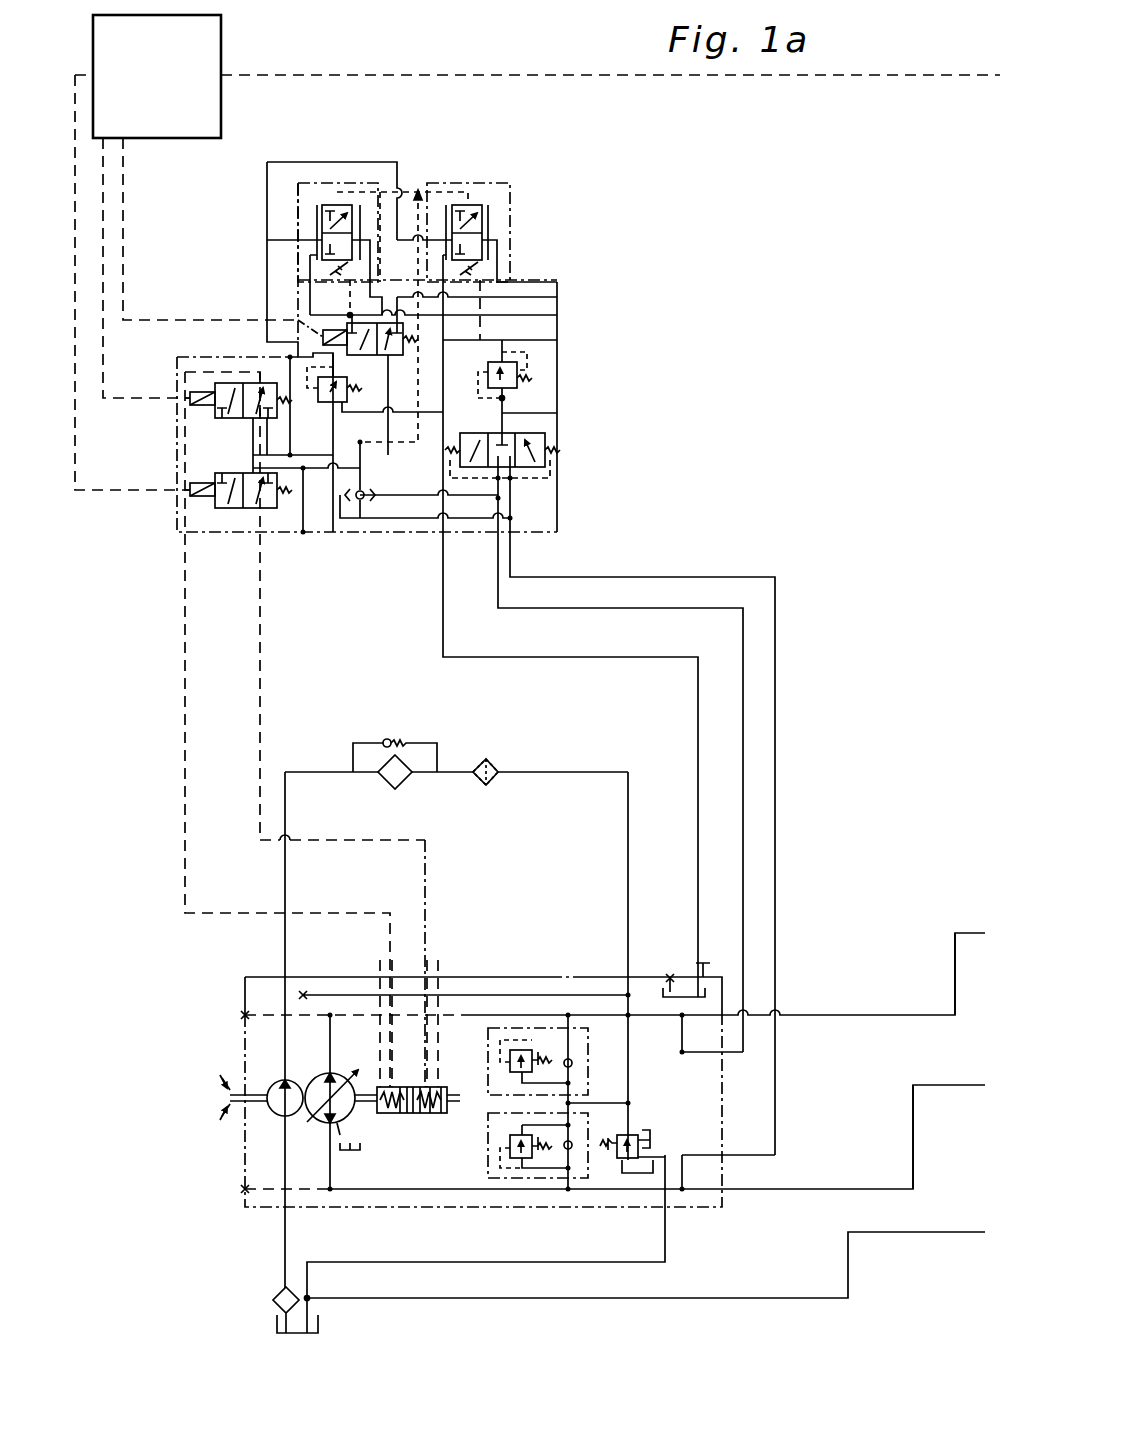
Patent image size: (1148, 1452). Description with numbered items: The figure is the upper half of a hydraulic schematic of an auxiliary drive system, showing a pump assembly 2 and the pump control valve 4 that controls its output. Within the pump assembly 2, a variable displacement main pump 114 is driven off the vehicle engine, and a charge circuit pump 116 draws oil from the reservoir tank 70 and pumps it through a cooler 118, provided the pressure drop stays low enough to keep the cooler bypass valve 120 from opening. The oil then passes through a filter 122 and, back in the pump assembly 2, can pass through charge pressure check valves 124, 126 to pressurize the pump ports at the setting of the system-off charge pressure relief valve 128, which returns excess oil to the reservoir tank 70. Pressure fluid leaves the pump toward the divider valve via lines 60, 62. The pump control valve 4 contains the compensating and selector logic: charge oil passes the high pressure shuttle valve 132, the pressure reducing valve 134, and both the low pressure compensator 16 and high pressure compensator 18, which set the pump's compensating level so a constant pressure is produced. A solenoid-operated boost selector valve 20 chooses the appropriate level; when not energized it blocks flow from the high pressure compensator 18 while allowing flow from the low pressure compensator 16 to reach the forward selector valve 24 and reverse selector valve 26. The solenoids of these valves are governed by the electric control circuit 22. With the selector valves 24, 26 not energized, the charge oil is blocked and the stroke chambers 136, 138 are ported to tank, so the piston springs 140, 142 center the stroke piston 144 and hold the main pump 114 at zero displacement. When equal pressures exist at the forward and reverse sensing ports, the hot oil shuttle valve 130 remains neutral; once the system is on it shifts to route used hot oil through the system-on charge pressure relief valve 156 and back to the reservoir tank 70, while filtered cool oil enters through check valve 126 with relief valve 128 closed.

The electric control circuit 22 is at (221, 50).
The low pressure compensator 16 is at (325, 205).
The high pressure compensator 18 is at (462, 205).
The selector valve 20 is at (348, 327).
The forward selector valve 24 is at (232, 418).
The reverse selector valve 26 is at (243, 508).
The pressure reducing valve 134 is at (329, 392).
The high pressure shuttle valve 132 is at (385, 485).
The system-on charge pressure relief valve 156 is at (520, 382).
The hot oil shuttle valve 130 is at (548, 445).
The pump control valve 4 is at (560, 502).
The cooler bypass valve 120 is at (389, 738).
The filter 122 is at (493, 760).
The cooler 118 is at (407, 790).
The pump assembly 2 is at (242, 1192).
The line 60 is at (955, 957).
The line 62 is at (913, 1146).
The variable displacement main pump 114 is at (326, 1072).
The charge circuit pump 116 is at (279, 1116).
The stroke chamber 136 is at (387, 1113).
The stroke chamber 138 is at (440, 1113).
The piston spring 140 is at (420, 1113).
The piston spring 142 is at (441, 1087).
The stroke piston 144 is at (430, 1087).
The charge pressure check valve 124 is at (573, 1058).
The charge pressure check valve 126 is at (573, 1141).
The system-off charge pressure relief valve 128 is at (645, 1143).
The reservoir tank 70 is at (277, 1325).